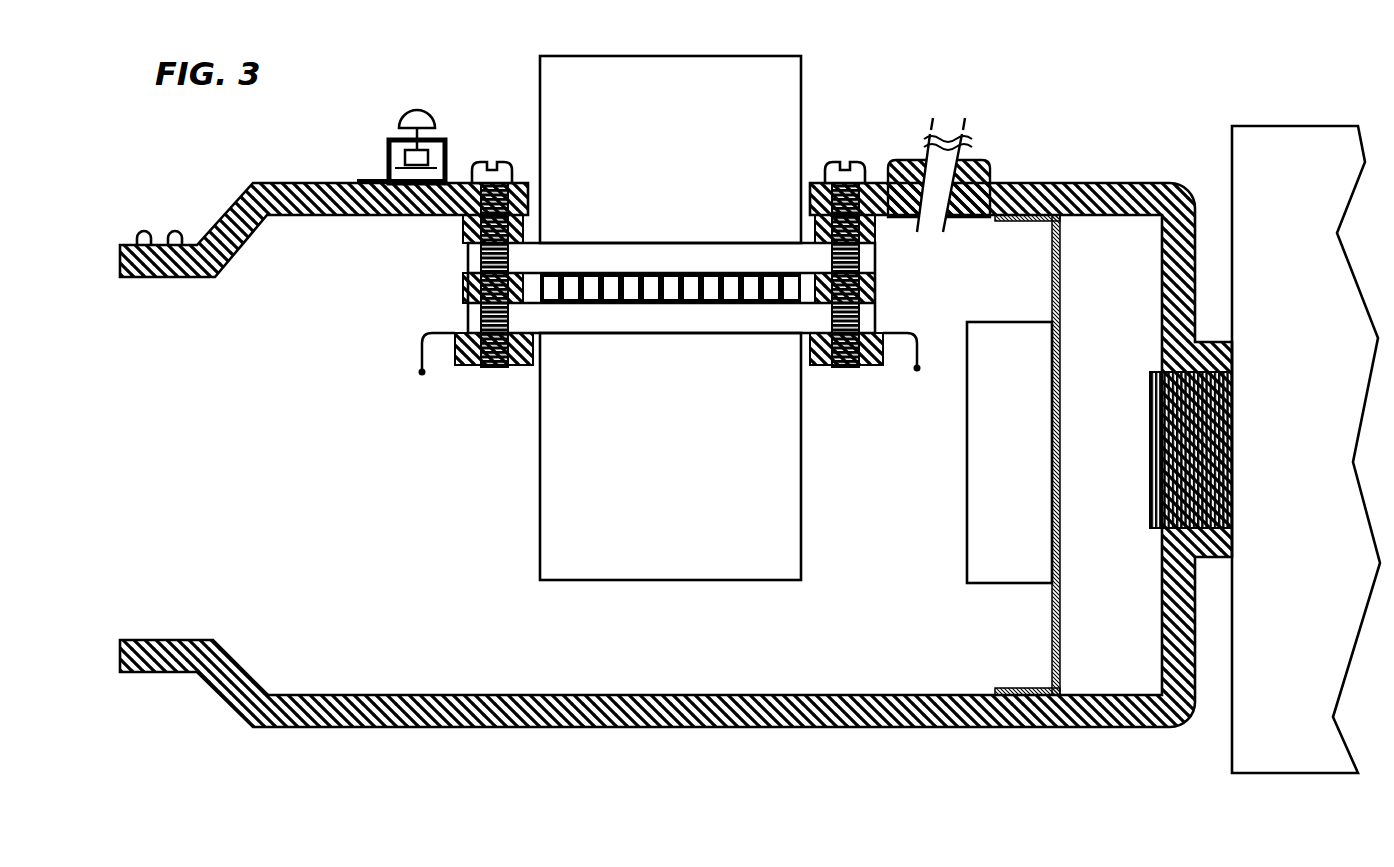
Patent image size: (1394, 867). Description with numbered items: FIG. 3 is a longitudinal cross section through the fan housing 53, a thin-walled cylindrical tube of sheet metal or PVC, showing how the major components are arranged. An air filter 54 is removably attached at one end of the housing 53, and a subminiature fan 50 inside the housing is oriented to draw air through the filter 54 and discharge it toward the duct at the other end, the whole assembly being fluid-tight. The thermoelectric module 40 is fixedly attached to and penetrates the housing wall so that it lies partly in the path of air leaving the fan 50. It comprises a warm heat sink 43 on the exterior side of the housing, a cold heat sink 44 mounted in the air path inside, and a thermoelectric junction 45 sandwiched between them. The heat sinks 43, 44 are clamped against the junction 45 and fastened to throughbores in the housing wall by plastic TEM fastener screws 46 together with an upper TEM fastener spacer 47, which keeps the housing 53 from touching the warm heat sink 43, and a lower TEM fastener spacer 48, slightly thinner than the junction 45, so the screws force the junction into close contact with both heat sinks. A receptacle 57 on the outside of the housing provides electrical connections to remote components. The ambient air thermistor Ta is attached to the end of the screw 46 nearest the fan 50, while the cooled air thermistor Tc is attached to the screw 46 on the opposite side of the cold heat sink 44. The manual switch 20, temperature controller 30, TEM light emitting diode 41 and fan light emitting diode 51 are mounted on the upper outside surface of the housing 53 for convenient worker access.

The manual switch 20 is at (410, 118).
The temperature controller 30 is at (410, 186).
The thermoelectric module 40 is at (676, 310).
The TEM light emitting diode 41 is at (140, 232).
The warm heat sink 43 is at (540, 88).
The cold heat sink 44 is at (540, 492).
The thermoelectric junction 45 is at (533, 282).
The TEM fastener screw 46 is at (498, 162).
The upper TEM fastener spacer 47 is at (463, 222).
The TEM fastener lower spacer 48 is at (463, 285).
The subminiature fan 50 is at (1010, 322).
The fan light emitting diode 51 is at (173, 233).
The fan housing 53 is at (300, 183).
The air filter 54 is at (1272, 126).
The receptacle 57 is at (988, 165).
The cooled air thermistor Tc is at (422, 372).
The ambient air thermistor Ta is at (917, 368).